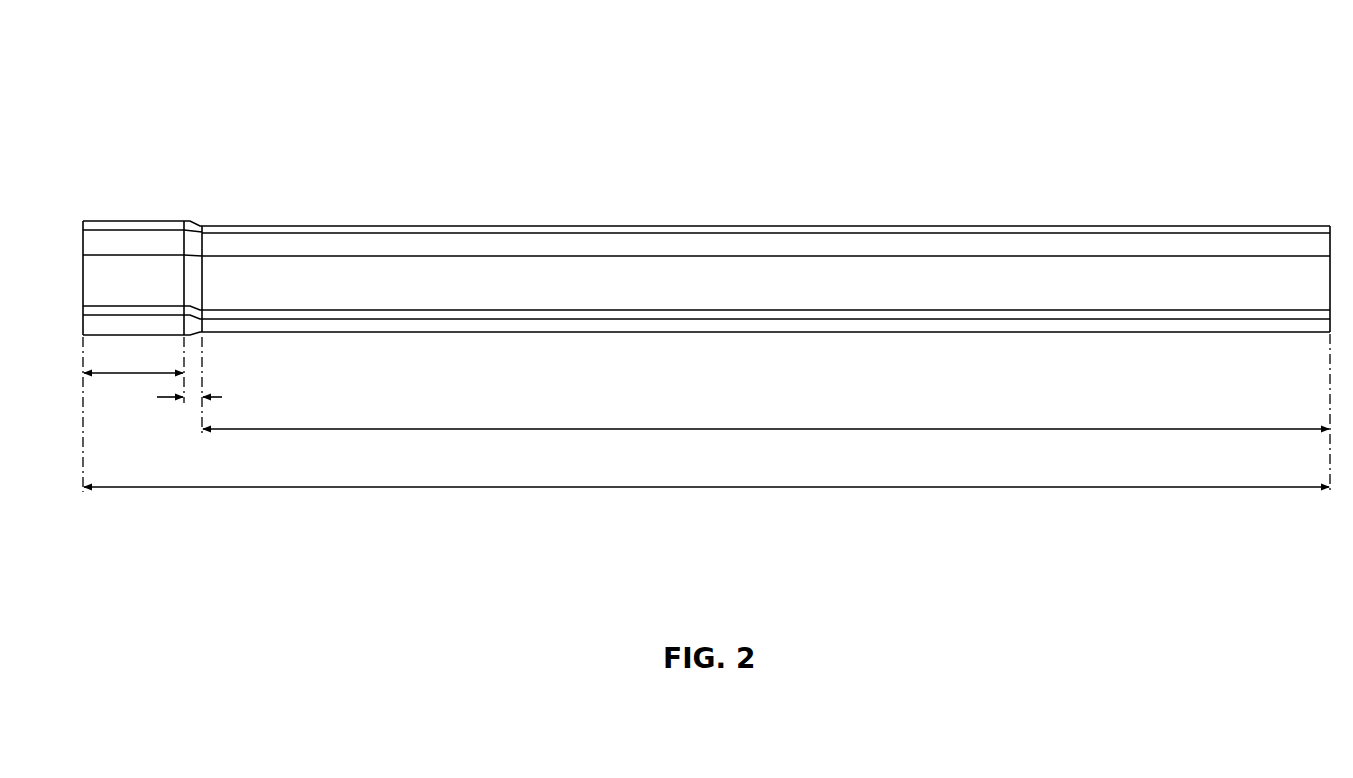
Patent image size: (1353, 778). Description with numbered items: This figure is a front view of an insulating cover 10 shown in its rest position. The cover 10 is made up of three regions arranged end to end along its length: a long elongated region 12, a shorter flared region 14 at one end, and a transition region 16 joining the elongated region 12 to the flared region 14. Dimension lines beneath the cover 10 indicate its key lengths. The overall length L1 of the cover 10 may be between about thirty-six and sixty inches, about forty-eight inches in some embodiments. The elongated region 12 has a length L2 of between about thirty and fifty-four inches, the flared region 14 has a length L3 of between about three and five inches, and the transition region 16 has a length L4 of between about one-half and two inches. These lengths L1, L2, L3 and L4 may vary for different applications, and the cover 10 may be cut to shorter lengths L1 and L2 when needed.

The insulating cover 10 is at (654, 64).
The elongated region 12 is at (796, 199).
The flared region 14 is at (141, 187).
The transition region 16 is at (201, 207).
The overall length L1 is at (688, 488).
The length of the elongated region L2 is at (613, 430).
The length of the flared region L3 is at (107, 372).
The length of the transition region L4 is at (222, 397).